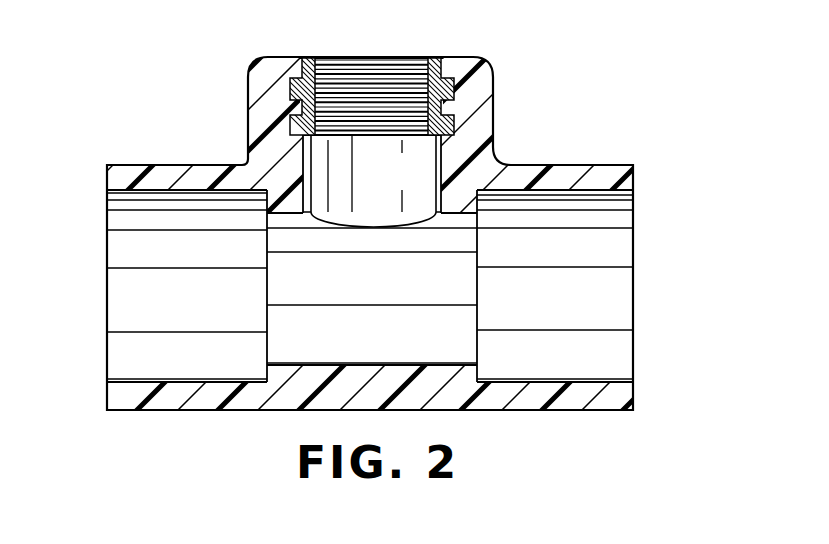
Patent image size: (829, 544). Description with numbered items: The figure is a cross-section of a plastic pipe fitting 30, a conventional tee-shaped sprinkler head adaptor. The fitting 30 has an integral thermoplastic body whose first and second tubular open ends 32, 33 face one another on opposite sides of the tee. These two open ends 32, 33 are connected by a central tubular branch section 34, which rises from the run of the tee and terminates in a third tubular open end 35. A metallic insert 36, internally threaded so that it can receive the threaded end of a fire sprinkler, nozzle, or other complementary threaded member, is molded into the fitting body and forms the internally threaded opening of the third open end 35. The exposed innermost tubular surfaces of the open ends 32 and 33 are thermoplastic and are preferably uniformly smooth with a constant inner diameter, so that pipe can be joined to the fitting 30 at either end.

The fitting 30 is at (600, 148).
The first tubular open end 32 is at (107, 288).
The second tubular open end 33 is at (635, 255).
The central tubular branch section 34 is at (302, 236).
The third tubular open end 35 is at (364, 58).
The metallic insert 36 is at (470, 83).